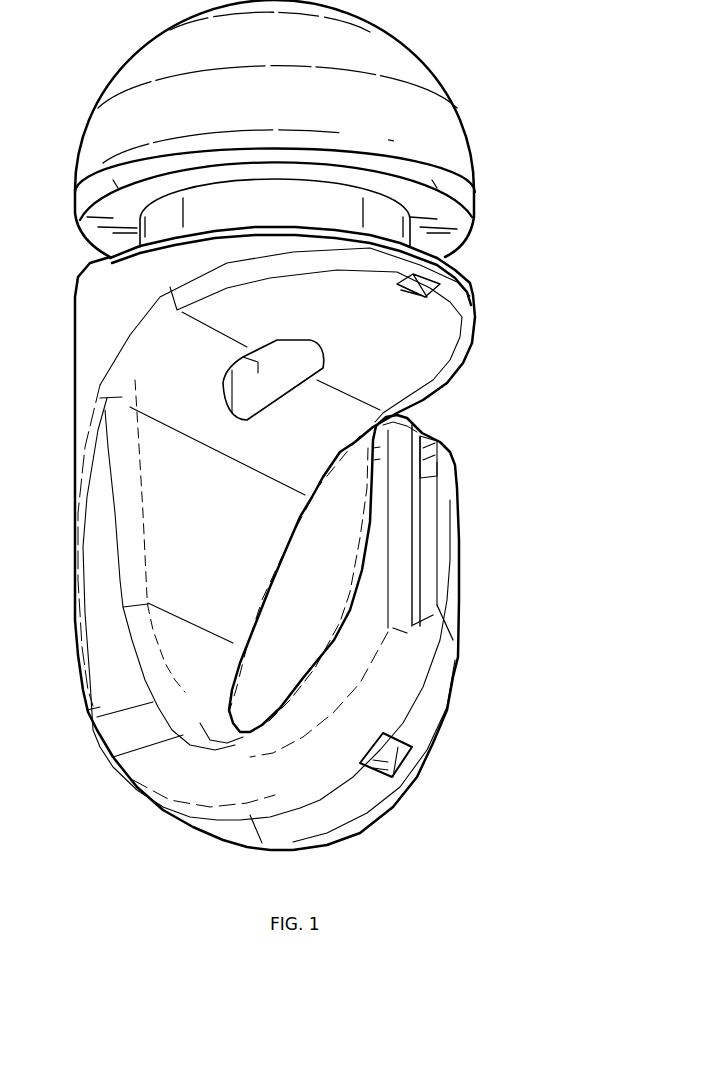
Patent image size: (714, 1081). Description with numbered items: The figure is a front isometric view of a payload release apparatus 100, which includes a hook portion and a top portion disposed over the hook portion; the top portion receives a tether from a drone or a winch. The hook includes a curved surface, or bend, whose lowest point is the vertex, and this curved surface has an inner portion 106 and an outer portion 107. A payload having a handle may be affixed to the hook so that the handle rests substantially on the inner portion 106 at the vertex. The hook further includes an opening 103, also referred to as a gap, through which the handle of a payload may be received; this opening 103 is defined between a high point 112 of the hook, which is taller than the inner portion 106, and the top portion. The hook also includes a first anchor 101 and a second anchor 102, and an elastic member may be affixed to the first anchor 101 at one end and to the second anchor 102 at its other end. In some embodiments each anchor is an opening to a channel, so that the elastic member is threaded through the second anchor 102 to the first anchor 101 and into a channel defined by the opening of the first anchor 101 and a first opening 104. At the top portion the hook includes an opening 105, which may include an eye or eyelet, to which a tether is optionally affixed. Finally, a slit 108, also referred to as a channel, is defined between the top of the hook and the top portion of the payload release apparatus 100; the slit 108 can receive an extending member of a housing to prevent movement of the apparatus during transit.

The payload release apparatus 100 is at (492, 92).
The first anchor 101 is at (434, 456).
The second anchor 102 is at (452, 281).
The opening 103 is at (497, 280).
The first opening 104 is at (405, 759).
The opening 105 is at (278, 383).
The inner portion 106 is at (261, 703).
The outer portion 107 is at (230, 844).
The slit 108 is at (68, 212).
The high point 112 is at (394, 412).